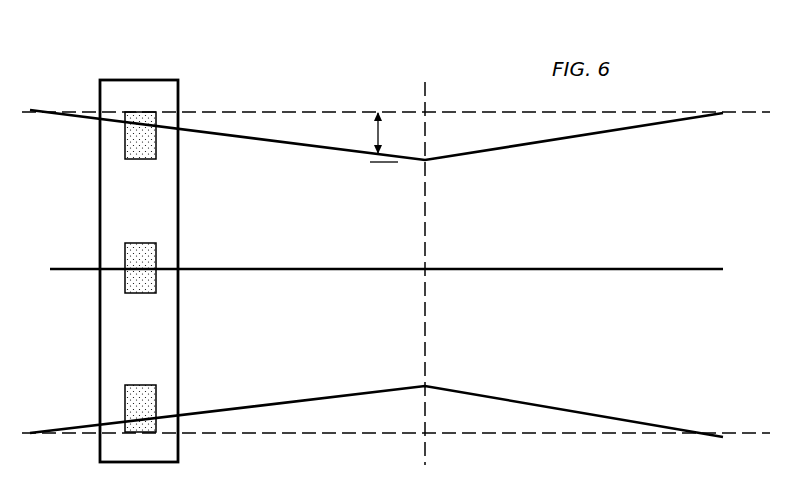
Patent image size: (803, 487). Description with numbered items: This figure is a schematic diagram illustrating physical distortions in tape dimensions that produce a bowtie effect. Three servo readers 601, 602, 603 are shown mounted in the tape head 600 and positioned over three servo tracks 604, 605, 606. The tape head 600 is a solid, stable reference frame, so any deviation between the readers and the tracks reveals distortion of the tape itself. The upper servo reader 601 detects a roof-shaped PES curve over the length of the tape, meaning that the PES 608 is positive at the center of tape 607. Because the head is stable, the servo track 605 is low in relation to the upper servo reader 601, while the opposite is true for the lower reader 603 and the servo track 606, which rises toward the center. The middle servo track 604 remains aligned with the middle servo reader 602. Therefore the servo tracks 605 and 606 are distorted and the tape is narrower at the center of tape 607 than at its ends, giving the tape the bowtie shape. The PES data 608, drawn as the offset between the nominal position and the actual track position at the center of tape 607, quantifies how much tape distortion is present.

The tape head 600 is at (140, 79).
The upper servo reader 601 is at (125, 136).
The servo reader 602 is at (125, 280).
The lower servo reader 603 is at (125, 410).
The servo track 604 is at (543, 268).
The servo track 605 is at (576, 140).
The servo track 606 is at (576, 410).
The center of tape 607 is at (424, 310).
The PES 608 is at (378, 138).